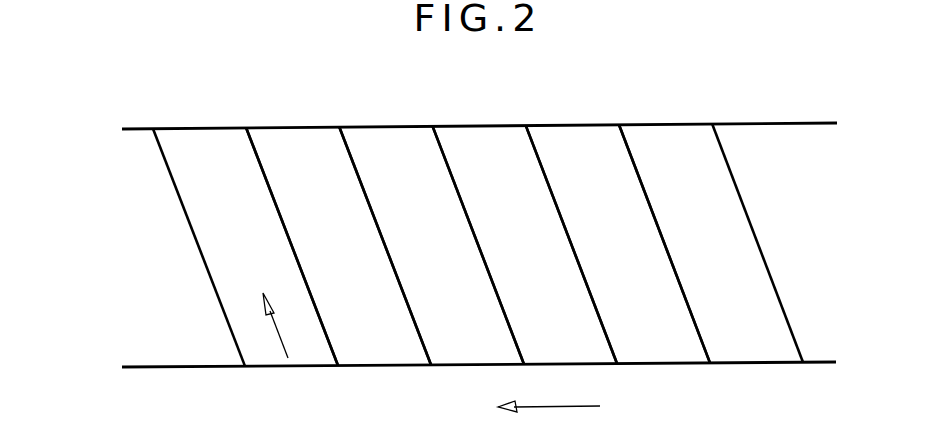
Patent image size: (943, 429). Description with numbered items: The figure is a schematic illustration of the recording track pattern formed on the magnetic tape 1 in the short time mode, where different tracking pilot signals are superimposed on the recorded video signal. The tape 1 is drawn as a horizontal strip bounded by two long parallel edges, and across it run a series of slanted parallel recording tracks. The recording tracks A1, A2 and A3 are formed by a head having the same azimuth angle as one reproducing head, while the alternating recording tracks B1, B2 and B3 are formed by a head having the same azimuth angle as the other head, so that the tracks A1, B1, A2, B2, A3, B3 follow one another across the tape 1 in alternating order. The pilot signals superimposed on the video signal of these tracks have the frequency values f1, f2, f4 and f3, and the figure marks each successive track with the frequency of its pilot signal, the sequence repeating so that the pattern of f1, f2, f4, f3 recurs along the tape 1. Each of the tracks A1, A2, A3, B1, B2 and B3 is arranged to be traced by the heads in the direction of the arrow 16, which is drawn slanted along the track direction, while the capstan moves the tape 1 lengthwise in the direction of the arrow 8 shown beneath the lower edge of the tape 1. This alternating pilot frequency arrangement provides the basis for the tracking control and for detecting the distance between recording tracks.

The magnetic tape 1 is at (765, 131).
The recording track A1 is at (210, 133).
The recording track B1 is at (295, 133).
The recording track A2 is at (393, 133).
The recording track B2 is at (482, 133).
The recording track A3 is at (573, 131).
The recording track B3 is at (670, 131).
The pilot signal frequency f1 is at (428, 232).
The pilot signal frequency f2 is at (522, 232).
The pilot signal frequency f3 is at (519, 232).
The pilot signal frequency f4 is at (430, 232).
The arrow indicating tracing direction 16 is at (281, 334).
The arrow indicating tape travel direction 8 is at (562, 405).